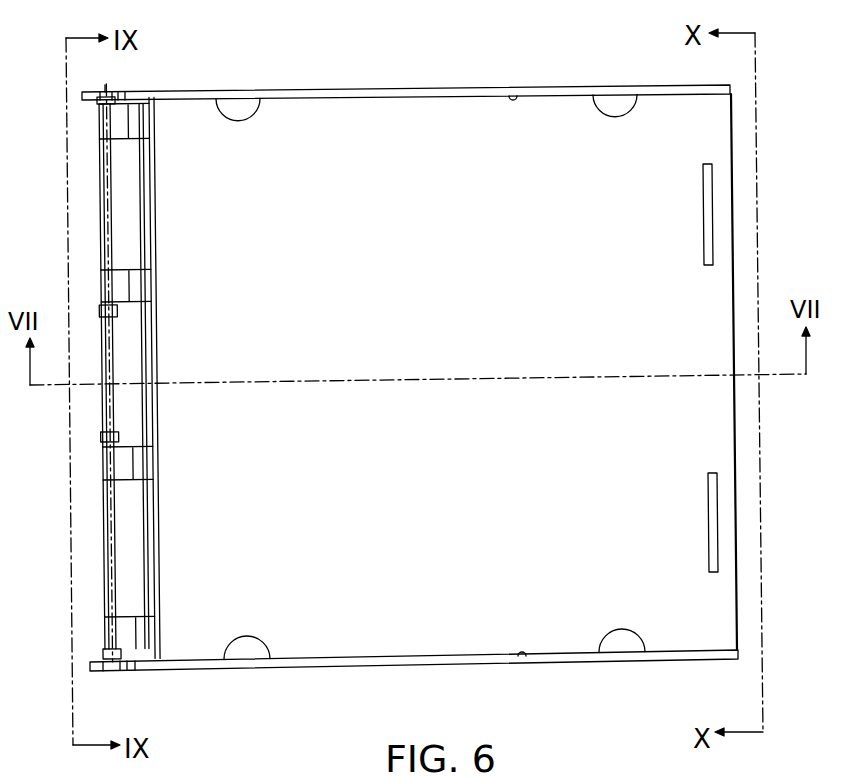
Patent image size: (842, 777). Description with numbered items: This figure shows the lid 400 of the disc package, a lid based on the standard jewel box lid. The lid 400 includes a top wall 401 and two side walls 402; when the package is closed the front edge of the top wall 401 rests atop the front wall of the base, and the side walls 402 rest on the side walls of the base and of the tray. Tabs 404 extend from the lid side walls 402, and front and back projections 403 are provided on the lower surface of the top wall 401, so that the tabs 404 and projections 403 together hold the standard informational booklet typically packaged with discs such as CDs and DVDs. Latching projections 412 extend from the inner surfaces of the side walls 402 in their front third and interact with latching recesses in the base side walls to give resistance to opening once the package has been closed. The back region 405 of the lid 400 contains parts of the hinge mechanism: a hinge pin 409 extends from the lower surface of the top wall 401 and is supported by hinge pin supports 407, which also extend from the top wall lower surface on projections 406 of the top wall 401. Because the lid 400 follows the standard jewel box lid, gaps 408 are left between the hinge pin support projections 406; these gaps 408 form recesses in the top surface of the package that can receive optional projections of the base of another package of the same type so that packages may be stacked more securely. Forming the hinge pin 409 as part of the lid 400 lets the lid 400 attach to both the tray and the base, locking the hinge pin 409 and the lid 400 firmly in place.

The lid 400 is at (318, 68).
The top wall 401 is at (461, 353).
The side walls 402 is at (433, 89).
The front and back projections 403 is at (713, 222).
The tabs 404 is at (236, 107).
The back region 405 is at (143, 690).
The projections 406 is at (135, 290).
The hinge pin supports 407 is at (118, 301).
The gaps 408 is at (128, 196).
The hinge pin 409 is at (152, 254).
The latching projections 412 is at (515, 94).